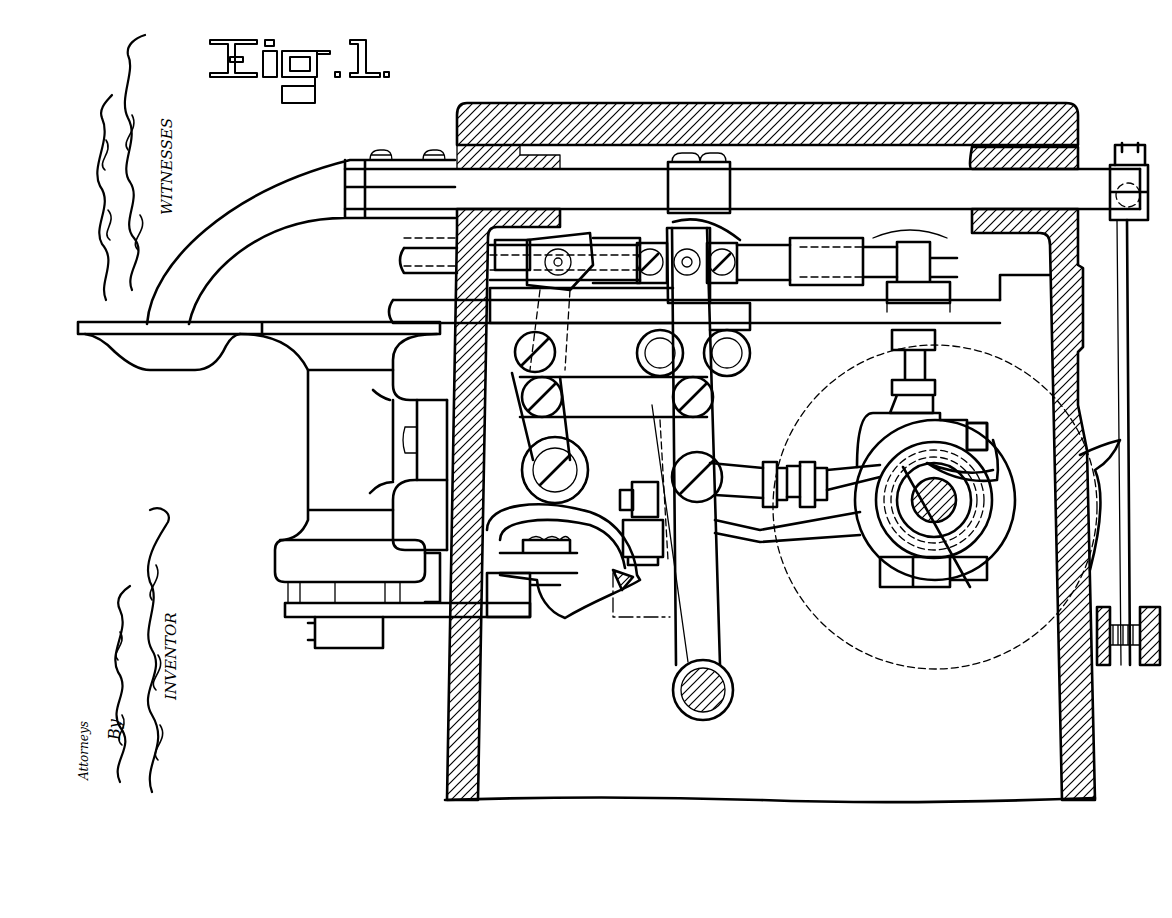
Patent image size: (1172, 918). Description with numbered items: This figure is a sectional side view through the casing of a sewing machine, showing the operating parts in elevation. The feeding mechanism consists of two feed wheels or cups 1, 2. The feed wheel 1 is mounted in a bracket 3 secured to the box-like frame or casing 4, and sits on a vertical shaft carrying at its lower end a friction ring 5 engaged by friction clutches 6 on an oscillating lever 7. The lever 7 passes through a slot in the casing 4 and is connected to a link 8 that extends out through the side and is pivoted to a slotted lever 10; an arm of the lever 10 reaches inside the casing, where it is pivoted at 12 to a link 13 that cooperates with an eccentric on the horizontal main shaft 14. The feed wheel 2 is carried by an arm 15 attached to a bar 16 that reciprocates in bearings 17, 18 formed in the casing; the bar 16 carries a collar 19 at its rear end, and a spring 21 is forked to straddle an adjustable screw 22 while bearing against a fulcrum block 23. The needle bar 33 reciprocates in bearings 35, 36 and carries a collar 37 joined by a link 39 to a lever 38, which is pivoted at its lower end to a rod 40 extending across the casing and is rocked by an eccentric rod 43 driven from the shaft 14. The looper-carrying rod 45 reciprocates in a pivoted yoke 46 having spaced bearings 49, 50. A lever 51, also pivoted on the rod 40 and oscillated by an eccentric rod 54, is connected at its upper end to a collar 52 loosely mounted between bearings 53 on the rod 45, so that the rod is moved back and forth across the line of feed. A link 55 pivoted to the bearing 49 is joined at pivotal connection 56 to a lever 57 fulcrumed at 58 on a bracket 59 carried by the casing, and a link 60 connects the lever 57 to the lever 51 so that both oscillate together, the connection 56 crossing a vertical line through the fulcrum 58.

The feed wheel 1 is at (303, 348).
The feed wheel 2 is at (170, 362).
The bracket 3 is at (318, 458).
The frame or casing 4 is at (455, 695).
The friction ring 5 is at (280, 565).
The friction clutches 6 is at (437, 605).
The oscillating lever 7 is at (392, 618).
The link 8 is at (523, 607).
The slotted lever 10 is at (585, 580).
The pivot 12 is at (643, 542).
The link 13 is at (990, 442).
The main shaft 14 is at (927, 510).
The arm 15 is at (285, 190).
The bar 16 is at (838, 178).
The bearing 17 is at (560, 150).
The bearing 18 is at (972, 160).
The collar 19 is at (1118, 178).
The spring 21 is at (1122, 350).
The adjustable screw 22 is at (1130, 607).
The fulcrum block 23 is at (1100, 440).
The needle bar 33 is at (392, 308).
The bearing 35 is at (530, 285).
The bearing 36 is at (1025, 294).
The collar 37 is at (752, 328).
The lever 38 is at (660, 418).
The link 39 is at (740, 375).
The rod 40 is at (712, 685).
The eccentric rod 43 is at (740, 520).
The looper-carrying rod 45 is at (402, 266).
The pivoted yoke 46 is at (778, 248).
The bearing 49 is at (625, 232).
The bearing 50 is at (815, 248).
The lever 51 is at (722, 455).
The collar 52 is at (700, 250).
The bearings 53 is at (762, 238).
The eccentric rod 54 is at (765, 470).
The link 55 is at (581, 305).
The pivotal connection 56 is at (548, 353).
The lever 57 is at (560, 428).
The fulcrum 58 is at (910, 248).
The bracket 59 is at (906, 357).
The link 60 is at (613, 397).